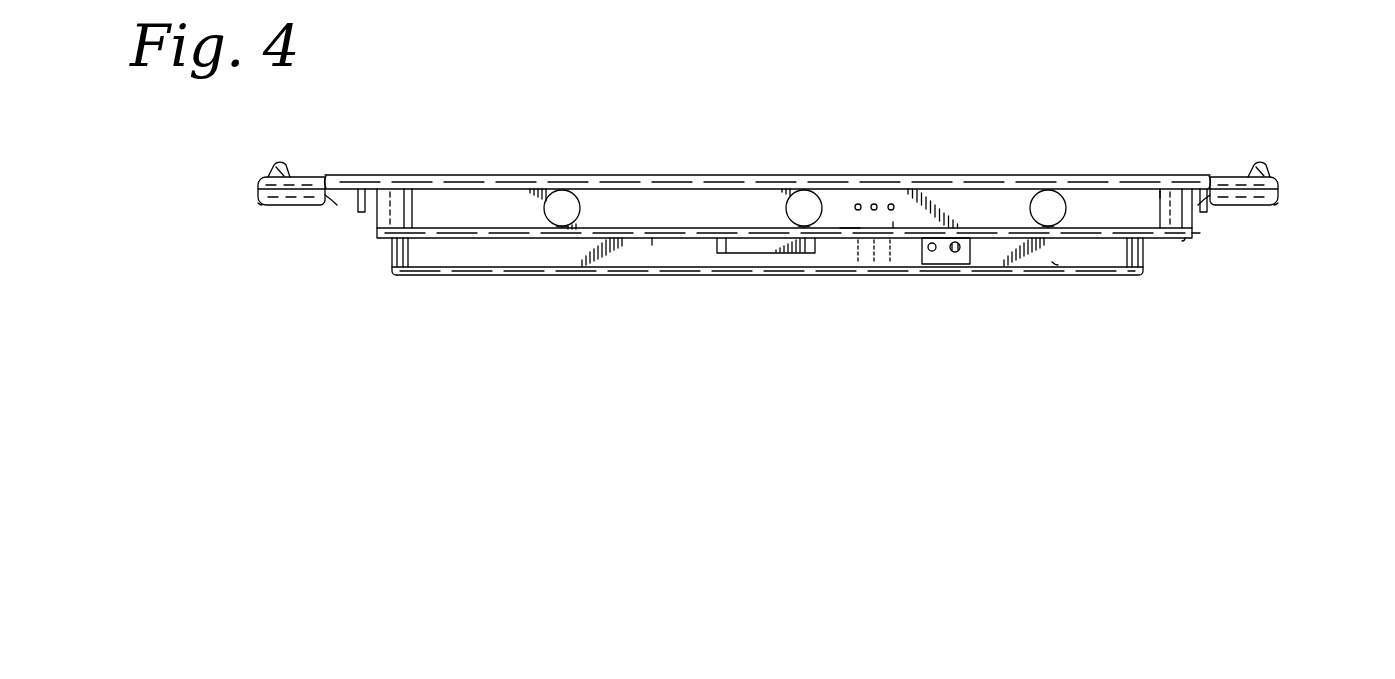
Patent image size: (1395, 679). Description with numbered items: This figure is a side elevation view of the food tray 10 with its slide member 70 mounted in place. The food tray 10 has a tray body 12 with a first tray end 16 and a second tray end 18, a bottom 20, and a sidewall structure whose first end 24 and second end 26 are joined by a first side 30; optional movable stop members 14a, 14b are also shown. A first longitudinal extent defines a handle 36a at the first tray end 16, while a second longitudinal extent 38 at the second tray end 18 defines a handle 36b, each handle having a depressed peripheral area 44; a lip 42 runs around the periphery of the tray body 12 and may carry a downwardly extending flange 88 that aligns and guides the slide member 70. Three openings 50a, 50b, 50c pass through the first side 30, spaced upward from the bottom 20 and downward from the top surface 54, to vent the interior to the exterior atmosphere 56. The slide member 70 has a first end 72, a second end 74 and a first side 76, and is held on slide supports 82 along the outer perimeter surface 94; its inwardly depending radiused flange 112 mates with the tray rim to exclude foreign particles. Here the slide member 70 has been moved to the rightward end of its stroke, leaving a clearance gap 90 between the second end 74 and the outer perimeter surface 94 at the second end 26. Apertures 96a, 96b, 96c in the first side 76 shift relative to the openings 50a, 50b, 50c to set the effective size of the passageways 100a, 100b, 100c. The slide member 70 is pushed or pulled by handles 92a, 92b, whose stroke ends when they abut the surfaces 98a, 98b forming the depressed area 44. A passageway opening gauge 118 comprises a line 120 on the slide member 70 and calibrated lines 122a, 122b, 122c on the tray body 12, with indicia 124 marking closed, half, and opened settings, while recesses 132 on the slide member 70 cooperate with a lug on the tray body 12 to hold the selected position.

The food tray 10 is at (1152, 101).
The tray body 12 is at (1060, 300).
The movable stop member 14a is at (270, 168).
The movable stop member 14b is at (1262, 165).
The first tray end 16 is at (258, 186).
The second tray end 18 is at (1282, 190).
The bottom 20 is at (472, 274).
The first end of sidewall structure 24 is at (392, 258).
The second end of sidewall structure 26 is at (1147, 256).
The first side of sidewall structure 30 is at (428, 256).
The handle 36a is at (302, 173).
The handle 36b is at (1212, 176).
The second longitudinal extent 38 is at (1222, 190).
The lip 42 is at (1170, 174).
The depressed peripheral area 44 is at (262, 203).
The opening 50a is at (555, 218).
The opening 50b is at (802, 203).
The opening 50c is at (1043, 200).
The top surface 54 is at (337, 173).
The exterior atmosphere 56 is at (442, 137).
The slide member 70 is at (400, 192).
The first end of slide member 72 is at (378, 234).
The second end of slide member 74 is at (1207, 230).
The first side of slide member 76 is at (463, 223).
The slide support 82 is at (742, 248).
The downwardly extending flange 88 is at (922, 176).
The clearance gap 90 is at (1178, 246).
The handle of slide member 92a is at (360, 212).
The handle of slide member 92b is at (1208, 213).
The outer perimeter surface 94 is at (1172, 242).
The aperture 96a is at (563, 217).
The aperture 96b is at (803, 192).
The aperture 96c is at (1049, 190).
The surface forming depressed area 98a is at (335, 207).
The surface forming depressed area 98b is at (1212, 208).
The passageway 100a is at (577, 215).
The passageway 100b is at (804, 226).
The passageway 100c is at (1047, 218).
The radiused flange 112 is at (652, 245).
The passageway opening gauge 118 is at (846, 222).
The line 120 is at (893, 222).
The calibrated line 122a is at (858, 240).
The calibrated line 122b is at (878, 250).
The calibrated line 122c is at (890, 243).
The indicia 124 is at (914, 262).
The recess 132 is at (873, 184).